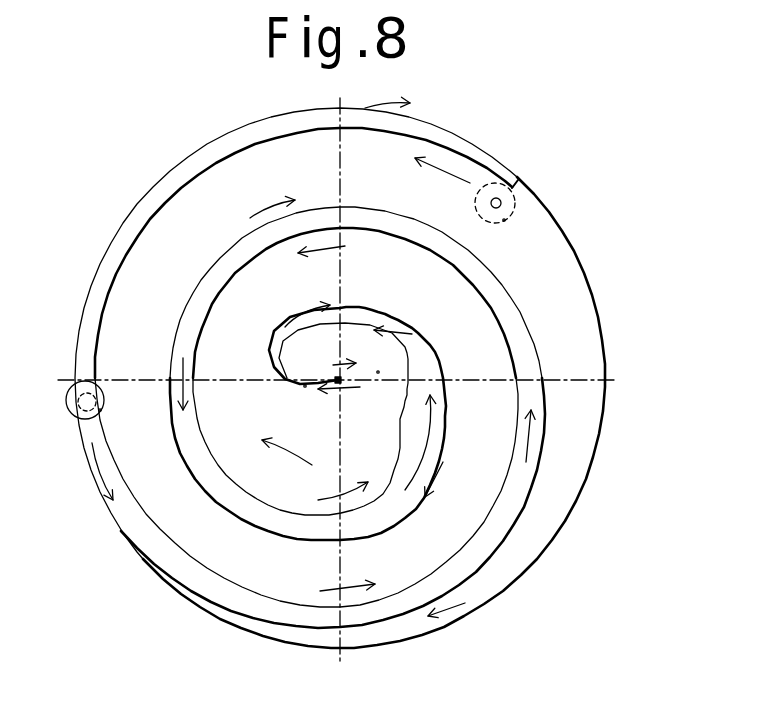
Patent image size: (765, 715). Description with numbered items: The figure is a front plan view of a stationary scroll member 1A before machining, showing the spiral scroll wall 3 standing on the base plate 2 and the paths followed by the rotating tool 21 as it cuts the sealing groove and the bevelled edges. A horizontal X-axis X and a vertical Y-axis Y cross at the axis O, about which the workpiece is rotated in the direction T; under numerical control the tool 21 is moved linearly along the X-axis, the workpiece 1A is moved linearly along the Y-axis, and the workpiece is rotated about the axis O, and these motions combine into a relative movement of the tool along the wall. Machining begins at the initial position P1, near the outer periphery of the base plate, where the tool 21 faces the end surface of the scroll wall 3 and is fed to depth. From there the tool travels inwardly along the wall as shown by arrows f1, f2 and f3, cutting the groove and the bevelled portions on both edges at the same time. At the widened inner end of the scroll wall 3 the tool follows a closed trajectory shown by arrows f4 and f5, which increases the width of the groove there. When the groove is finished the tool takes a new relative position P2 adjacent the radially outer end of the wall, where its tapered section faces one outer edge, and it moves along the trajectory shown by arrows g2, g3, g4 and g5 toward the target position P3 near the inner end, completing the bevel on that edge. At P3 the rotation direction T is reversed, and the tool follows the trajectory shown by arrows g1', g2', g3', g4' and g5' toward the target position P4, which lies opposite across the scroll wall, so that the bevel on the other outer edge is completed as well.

The stationary scroll member 1A is at (586, 266).
The base plate 2 is at (597, 433).
The scroll wall 3 is at (521, 486).
The tool 21 is at (477, 206).
The initial position P1 is at (104, 414).
The relative position P2 is at (503, 222).
The target position P3 is at (305, 388).
The target position P4 is at (514, 186).
The axis O is at (339, 384).
The X-axis X is at (338, 382).
The Y-axis Y is at (338, 383).
The rotating direction T is at (287, 462).
The arrow f1 is at (95, 484).
The arrow f2 is at (536, 452).
The arrow f3 is at (193, 373).
The arrow f4 is at (378, 372).
The arrow f5 is at (418, 357).
The arrow g1' is at (395, 213).
The arrow g2 is at (337, 570).
The arrow g2' is at (452, 485).
The arrow g3 is at (340, 266).
The arrow g3' is at (272, 190).
The arrow g4 is at (345, 472).
The arrow g4' is at (472, 627).
The arrow g5 is at (365, 384).
The arrow g5' is at (409, 88).